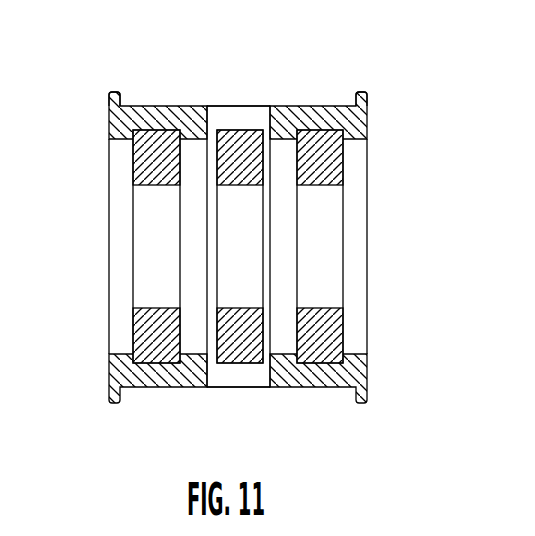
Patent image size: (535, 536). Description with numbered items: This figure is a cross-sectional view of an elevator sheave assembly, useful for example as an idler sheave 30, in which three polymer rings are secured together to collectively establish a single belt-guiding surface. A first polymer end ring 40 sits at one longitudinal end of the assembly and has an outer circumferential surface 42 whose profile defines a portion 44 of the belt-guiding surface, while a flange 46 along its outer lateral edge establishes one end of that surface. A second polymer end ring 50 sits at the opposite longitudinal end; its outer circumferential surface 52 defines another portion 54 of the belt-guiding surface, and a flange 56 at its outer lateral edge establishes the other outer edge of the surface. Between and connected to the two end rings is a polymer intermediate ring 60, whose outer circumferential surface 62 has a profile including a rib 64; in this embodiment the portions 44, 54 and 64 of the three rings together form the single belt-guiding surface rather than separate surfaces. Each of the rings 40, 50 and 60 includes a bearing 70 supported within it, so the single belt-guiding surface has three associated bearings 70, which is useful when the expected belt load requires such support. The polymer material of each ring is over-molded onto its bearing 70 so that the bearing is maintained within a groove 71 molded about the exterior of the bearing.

The idler sheave 30 is at (243, 231).
The first polymer end ring 40 is at (129, 240).
The outer circumferential surface 42 is at (167, 388).
The portion of belt-guiding surface 44 is at (172, 106).
The flange 46 is at (113, 92).
The second polymer end ring 50 is at (345, 240).
The outer circumferential surface 52 is at (316, 388).
The portion of belt-guiding surface 54 is at (313, 106).
The flange 56 is at (362, 92).
The polymer intermediate ring 60 is at (239, 231).
The outer circumferential surface 62 is at (238, 388).
The rib 64 is at (222, 106).
The bearing 70 is at (157, 312).
The groove 71 is at (322, 348).